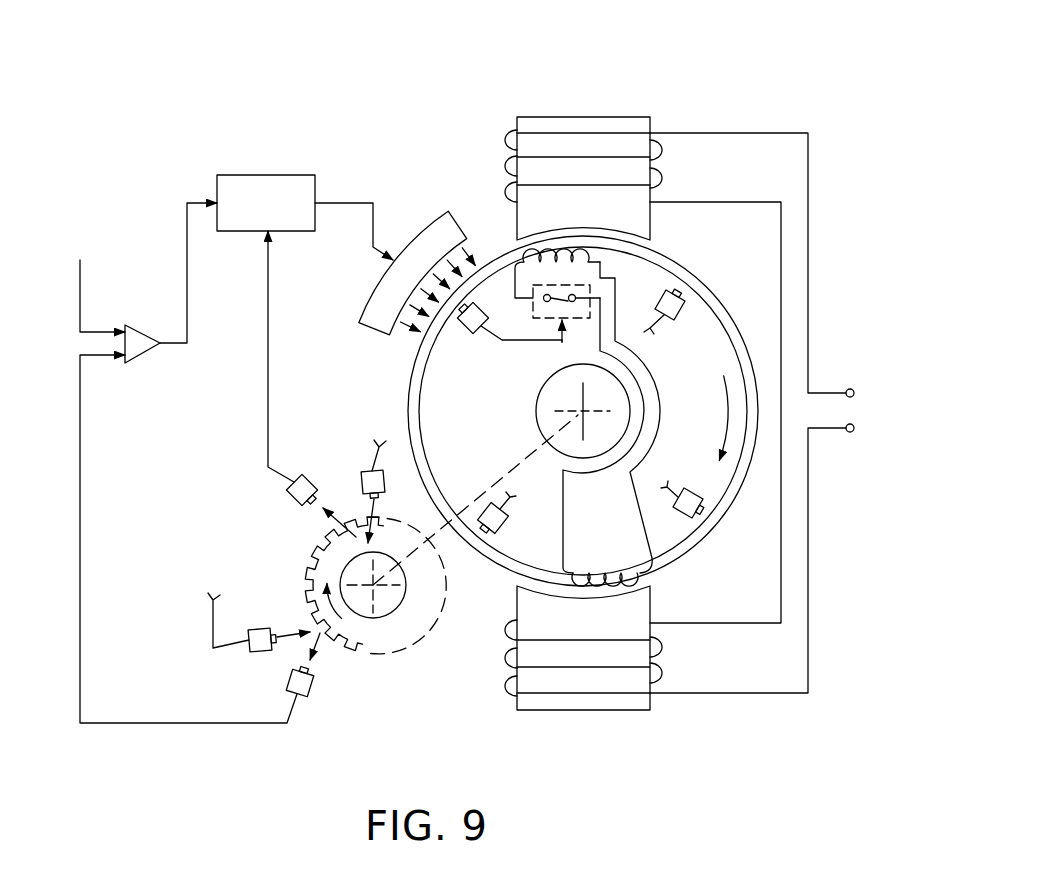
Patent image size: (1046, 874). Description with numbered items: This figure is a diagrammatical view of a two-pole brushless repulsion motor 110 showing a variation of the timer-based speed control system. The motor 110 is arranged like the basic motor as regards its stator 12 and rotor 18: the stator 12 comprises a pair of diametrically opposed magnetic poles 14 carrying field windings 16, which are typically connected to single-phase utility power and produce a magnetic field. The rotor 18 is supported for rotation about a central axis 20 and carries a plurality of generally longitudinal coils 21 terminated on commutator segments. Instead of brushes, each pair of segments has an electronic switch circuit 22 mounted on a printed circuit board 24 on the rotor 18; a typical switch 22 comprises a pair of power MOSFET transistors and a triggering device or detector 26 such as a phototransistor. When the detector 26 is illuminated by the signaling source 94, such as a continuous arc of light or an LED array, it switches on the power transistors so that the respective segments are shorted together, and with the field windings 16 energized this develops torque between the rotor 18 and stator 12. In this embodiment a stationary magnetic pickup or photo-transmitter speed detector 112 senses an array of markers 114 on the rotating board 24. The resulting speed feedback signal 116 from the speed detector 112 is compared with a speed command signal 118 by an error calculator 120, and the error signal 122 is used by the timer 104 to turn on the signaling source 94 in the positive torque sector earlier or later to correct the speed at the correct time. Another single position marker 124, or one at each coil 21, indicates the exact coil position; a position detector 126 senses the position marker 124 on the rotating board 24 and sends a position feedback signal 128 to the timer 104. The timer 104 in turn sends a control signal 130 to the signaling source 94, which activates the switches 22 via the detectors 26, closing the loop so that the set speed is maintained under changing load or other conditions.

The motor stator 12 is at (572, 115).
The magnetic poles 14 is at (620, 125).
The field windings 16 is at (663, 175).
The rotor 18 is at (715, 290).
The central axis 20 is at (547, 440).
The coils 21 is at (590, 257).
The electronic switch circuit 22 is at (542, 320).
The printed circuit board 24 is at (680, 543).
The detector 26 is at (465, 327).
The signaling source 94 is at (442, 228).
The timer 104 is at (243, 178).
The BLR motor 110 is at (707, 62).
The speed detector 112 is at (313, 690).
The array of markers 114 is at (307, 587).
The speed feedback signal 116 is at (140, 725).
The speed command signal 118 is at (80, 290).
The error calculator 120 is at (140, 350).
The error signal 122 is at (187, 295).
The position marker 124 is at (325, 547).
The position detector 126 is at (305, 478).
The position feedback signal 128 is at (270, 378).
The control signal 130 is at (347, 200).